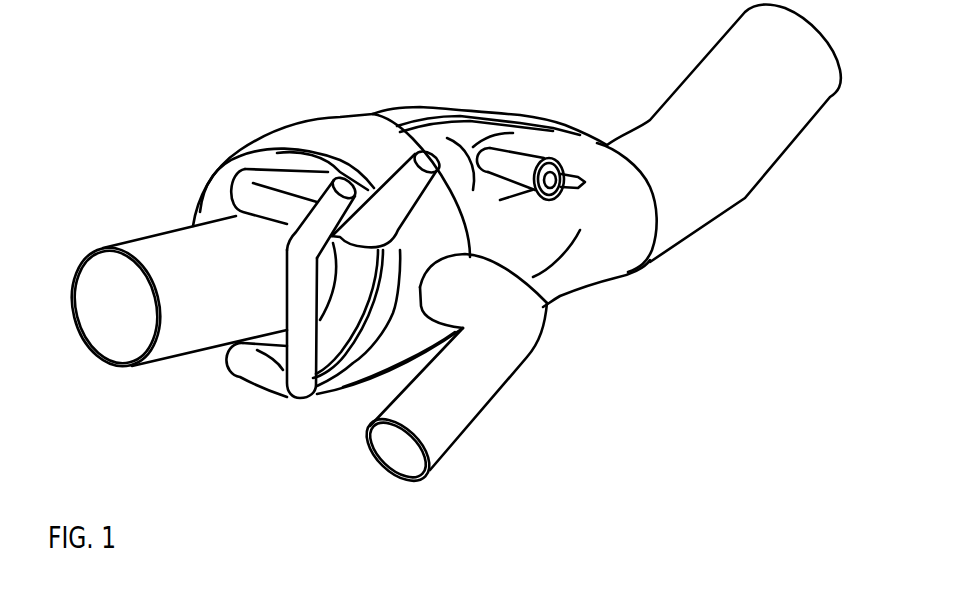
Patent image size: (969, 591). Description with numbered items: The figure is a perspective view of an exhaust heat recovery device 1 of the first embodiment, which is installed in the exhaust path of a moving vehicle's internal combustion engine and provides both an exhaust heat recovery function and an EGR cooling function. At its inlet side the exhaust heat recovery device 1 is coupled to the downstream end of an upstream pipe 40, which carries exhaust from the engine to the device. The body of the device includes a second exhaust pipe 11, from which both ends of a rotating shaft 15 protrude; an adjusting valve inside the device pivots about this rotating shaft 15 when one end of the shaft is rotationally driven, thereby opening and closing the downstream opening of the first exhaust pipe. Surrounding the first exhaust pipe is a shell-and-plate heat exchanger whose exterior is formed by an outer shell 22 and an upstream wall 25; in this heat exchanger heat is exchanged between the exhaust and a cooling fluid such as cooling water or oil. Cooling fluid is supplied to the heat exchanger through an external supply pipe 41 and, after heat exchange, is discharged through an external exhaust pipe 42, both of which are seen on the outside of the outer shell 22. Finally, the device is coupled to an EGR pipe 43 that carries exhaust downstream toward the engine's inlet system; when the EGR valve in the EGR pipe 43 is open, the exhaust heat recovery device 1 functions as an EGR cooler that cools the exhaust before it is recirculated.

The exhaust heat recovery device 1 is at (683, 391).
The second exhaust pipe 11 is at (413, 115).
The rotating shaft 15 is at (520, 160).
The outer shell 22 is at (337, 132).
The upstream wall 25 is at (217, 203).
The upstream pipe 40 is at (203, 340).
The external supply pipe 41 is at (272, 180).
The external exhaust pipe 42 is at (290, 392).
The EGR pipe 43 is at (500, 380).